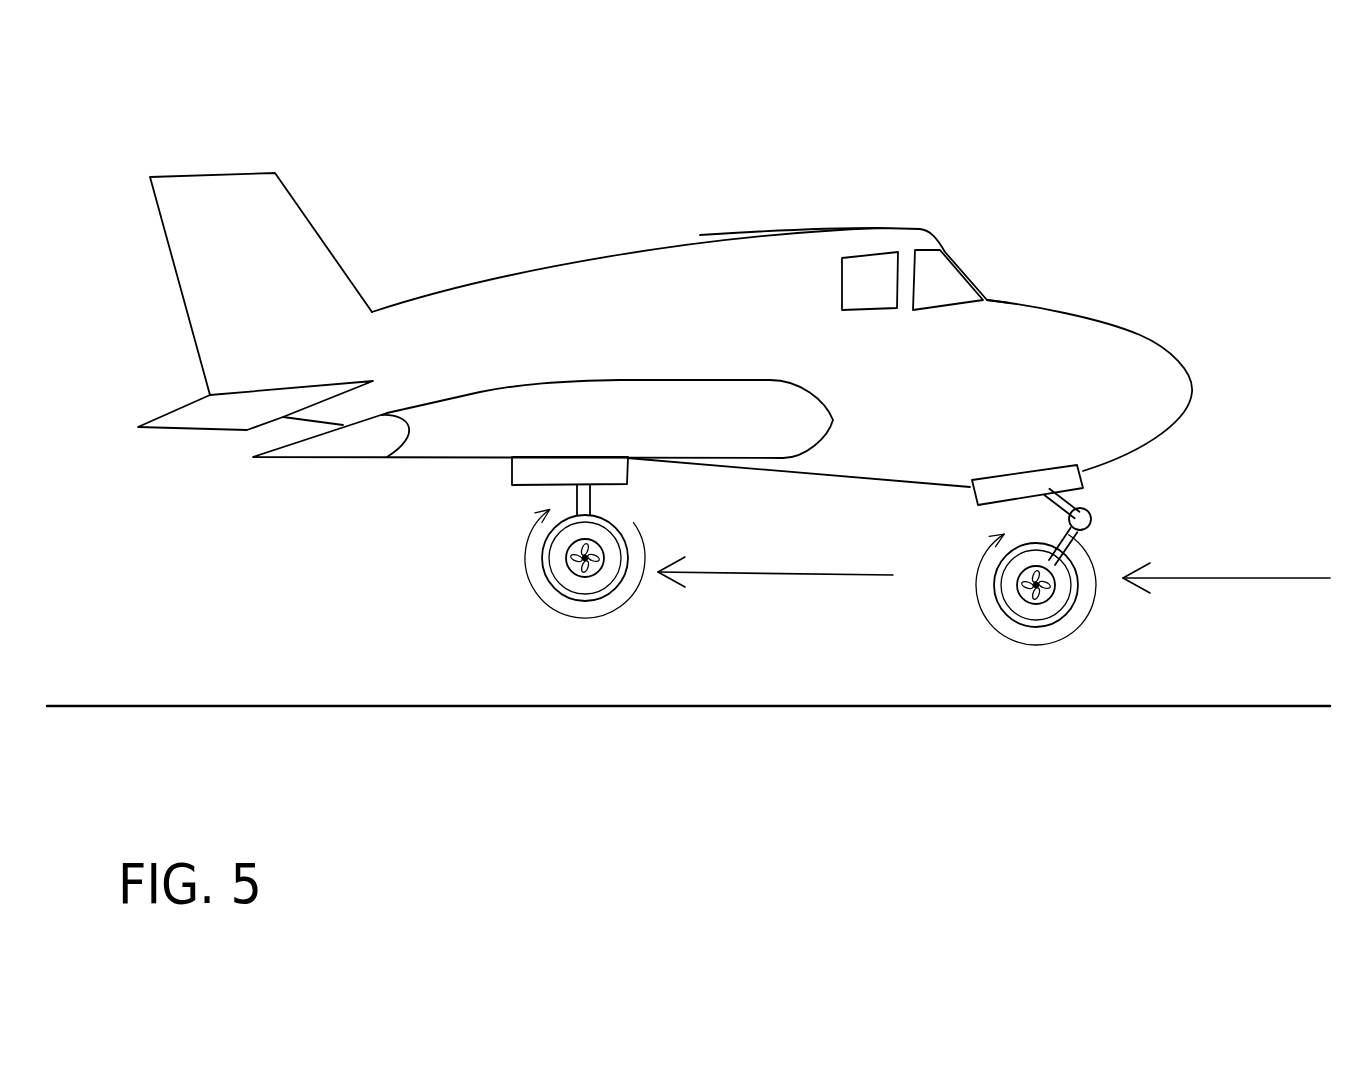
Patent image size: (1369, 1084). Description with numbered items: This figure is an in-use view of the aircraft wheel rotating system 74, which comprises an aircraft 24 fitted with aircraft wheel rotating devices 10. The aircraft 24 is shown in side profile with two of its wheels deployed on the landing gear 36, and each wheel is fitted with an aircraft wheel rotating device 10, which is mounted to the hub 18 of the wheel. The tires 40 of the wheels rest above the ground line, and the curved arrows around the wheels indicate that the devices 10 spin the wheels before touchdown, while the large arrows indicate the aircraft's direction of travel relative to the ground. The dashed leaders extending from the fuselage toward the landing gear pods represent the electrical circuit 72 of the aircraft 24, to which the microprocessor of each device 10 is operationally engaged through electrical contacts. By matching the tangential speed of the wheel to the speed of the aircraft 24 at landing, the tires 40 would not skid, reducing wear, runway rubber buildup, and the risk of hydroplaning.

The aircraft wheel rotating device 10 is at (568, 562).
The hub 18 is at (582, 586).
The aircraft 24 is at (861, 226).
The landing gear 36 is at (1045, 512).
The tires 40 is at (614, 592).
The electrical circuit 72 is at (567, 455).
The aircraft wheel rotating system 74 is at (1036, 256).